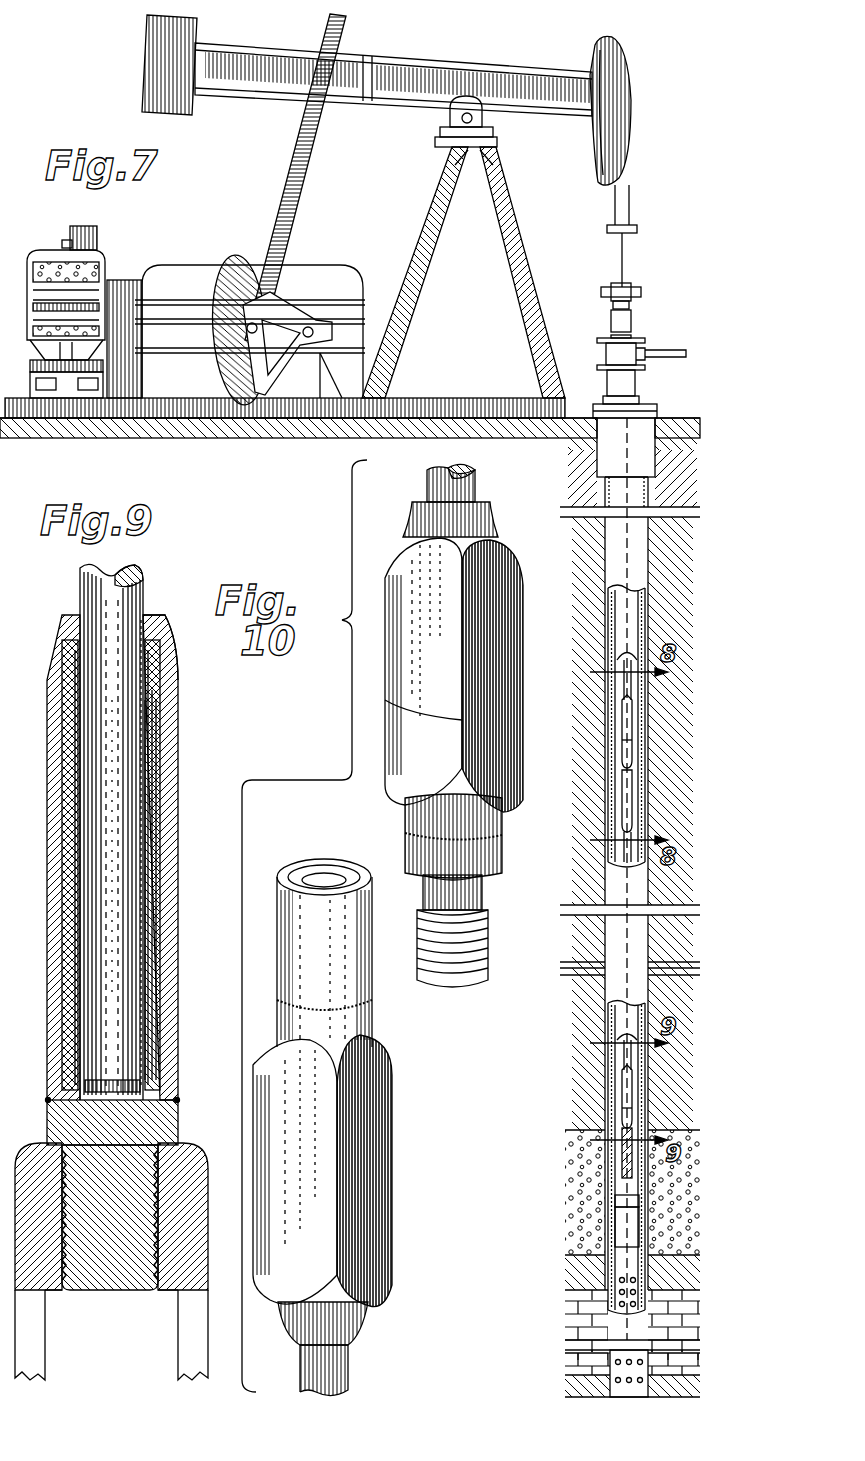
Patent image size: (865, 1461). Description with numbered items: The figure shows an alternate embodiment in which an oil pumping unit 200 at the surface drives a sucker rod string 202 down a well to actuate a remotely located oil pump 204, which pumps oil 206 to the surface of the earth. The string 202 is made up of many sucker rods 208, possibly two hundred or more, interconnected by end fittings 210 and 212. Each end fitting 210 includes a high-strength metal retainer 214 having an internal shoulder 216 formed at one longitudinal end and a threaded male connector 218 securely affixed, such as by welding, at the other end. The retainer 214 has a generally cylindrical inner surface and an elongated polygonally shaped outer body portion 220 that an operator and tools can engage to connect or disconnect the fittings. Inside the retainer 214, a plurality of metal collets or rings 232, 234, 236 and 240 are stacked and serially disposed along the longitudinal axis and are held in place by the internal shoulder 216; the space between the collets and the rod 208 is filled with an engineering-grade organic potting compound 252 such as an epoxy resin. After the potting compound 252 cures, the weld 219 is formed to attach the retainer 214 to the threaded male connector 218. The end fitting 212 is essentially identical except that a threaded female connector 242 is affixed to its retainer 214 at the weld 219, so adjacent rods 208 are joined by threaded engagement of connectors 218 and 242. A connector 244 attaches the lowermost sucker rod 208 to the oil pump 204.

In FIG. 7, the oil pumping unit 200 is at (498, 48).
In FIG. 7, the sucker rod string 202 is at (578, 596).
In FIG. 7, the oil pump 204 is at (615, 1215).
In FIG. 7, the oil 206 is at (612, 1170).
In FIG. 7, the sucker rod 208 is at (618, 660).
In FIG. 9, the sucker rod 208 is at (130, 585).
In FIG. 10, the sucker rod 208 is at (472, 484).
In FIG. 7, the end fitting 210 is at (622, 722).
In FIG. 9, the end fitting 210 is at (52, 636).
In FIG. 10, the end fitting 210 is at (392, 540).
In FIG. 7, the end fitting 212 is at (622, 800).
In FIG. 10, the end fitting 212 is at (428, 1110).
In FIG. 9, the retainer 214 is at (158, 640).
In FIG. 10, the retainer 214 is at (483, 518).
In FIG. 9, the internal shoulder 216 is at (160, 690).
In FIG. 9, the threaded male connector 218 is at (105, 1262).
In FIG. 10, the threaded male connector 218 is at (486, 940).
In FIG. 9, the weld 219 is at (178, 1100).
In FIG. 10, the weld 219 is at (425, 836).
In FIG. 10, the body portion 220 is at (395, 768).
In FIG. 9, the collet 232 is at (150, 1010).
In FIG. 9, the collet 234 is at (150, 948).
In FIG. 9, the collet 236 is at (150, 862).
In FIG. 9, the collet 240 is at (152, 725).
In FIG. 10, the threaded female connector 242 is at (300, 865).
In FIG. 7, the connector 244 is at (608, 1116).
In FIG. 9, the connector 244 is at (42, 1285).
In FIG. 9, the potting compound 252 is at (150, 906).